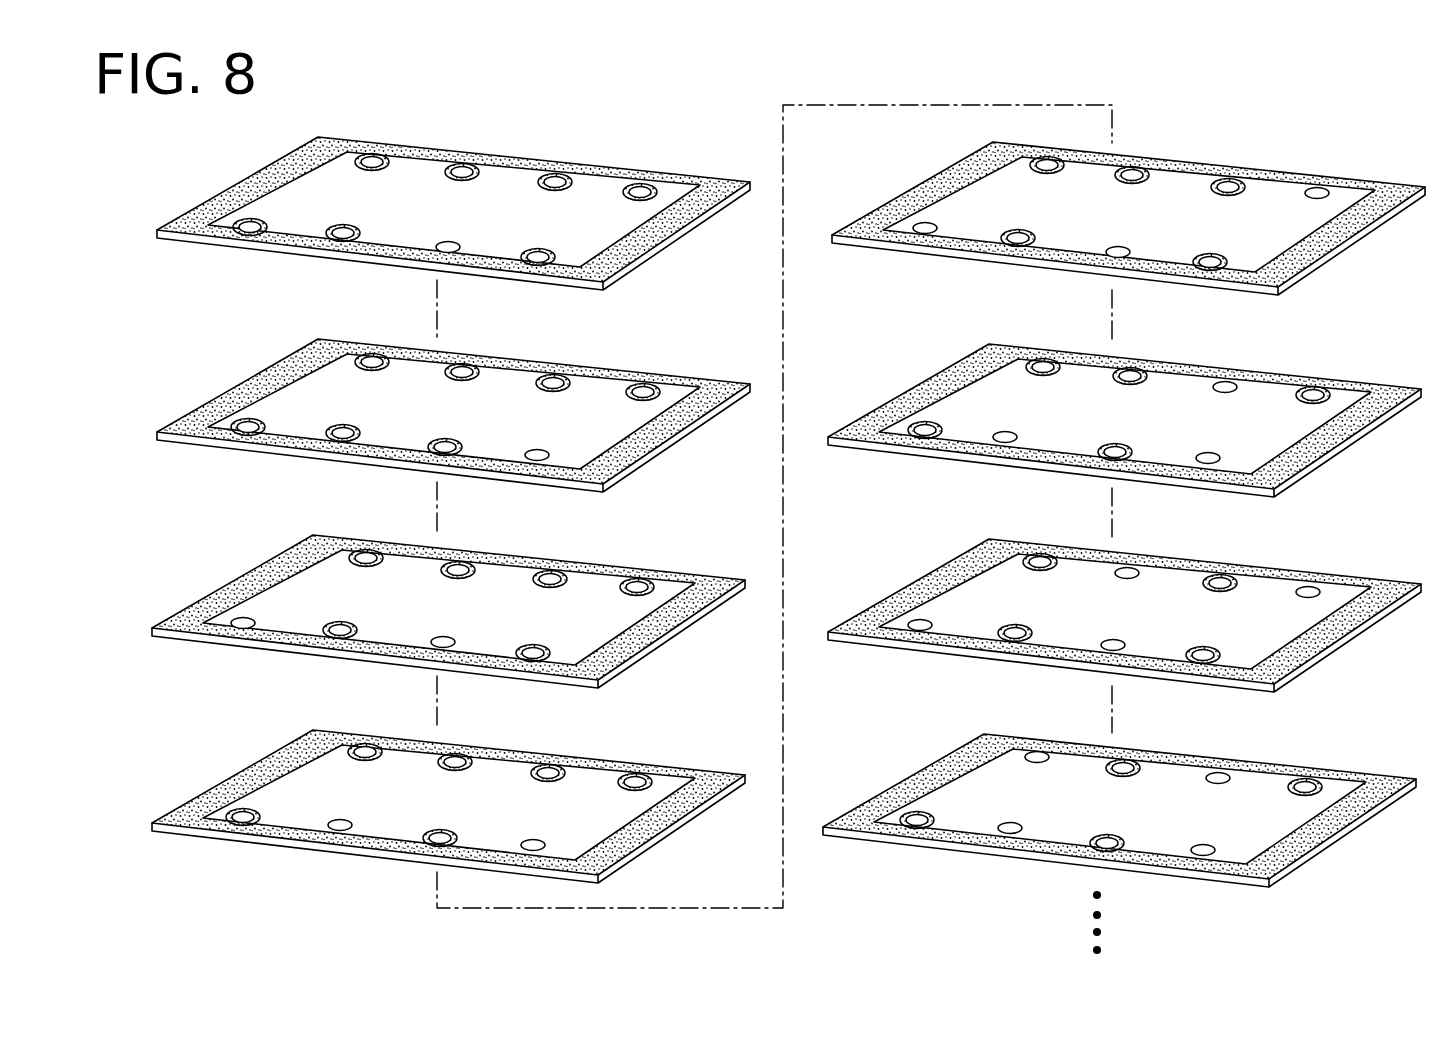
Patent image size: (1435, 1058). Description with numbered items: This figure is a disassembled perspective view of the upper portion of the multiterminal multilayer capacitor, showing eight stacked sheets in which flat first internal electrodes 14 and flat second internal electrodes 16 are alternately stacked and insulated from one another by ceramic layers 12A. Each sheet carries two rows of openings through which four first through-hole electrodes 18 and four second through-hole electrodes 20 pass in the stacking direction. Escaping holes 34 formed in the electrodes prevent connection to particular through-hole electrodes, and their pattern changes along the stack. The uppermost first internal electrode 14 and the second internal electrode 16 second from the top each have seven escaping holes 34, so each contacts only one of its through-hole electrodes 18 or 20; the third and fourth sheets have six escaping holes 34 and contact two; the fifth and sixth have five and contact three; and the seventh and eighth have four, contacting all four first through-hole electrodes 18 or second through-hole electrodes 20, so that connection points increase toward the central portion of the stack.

The ceramic layer 12A is at (706, 198).
The first internal electrode 14 is at (485, 588).
The second internal electrode 16 is at (432, 385).
The first through-hole electrode 18 is at (455, 247).
The second through-hole electrode 20 is at (533, 455).
The escaping hole 34 is at (390, 178).